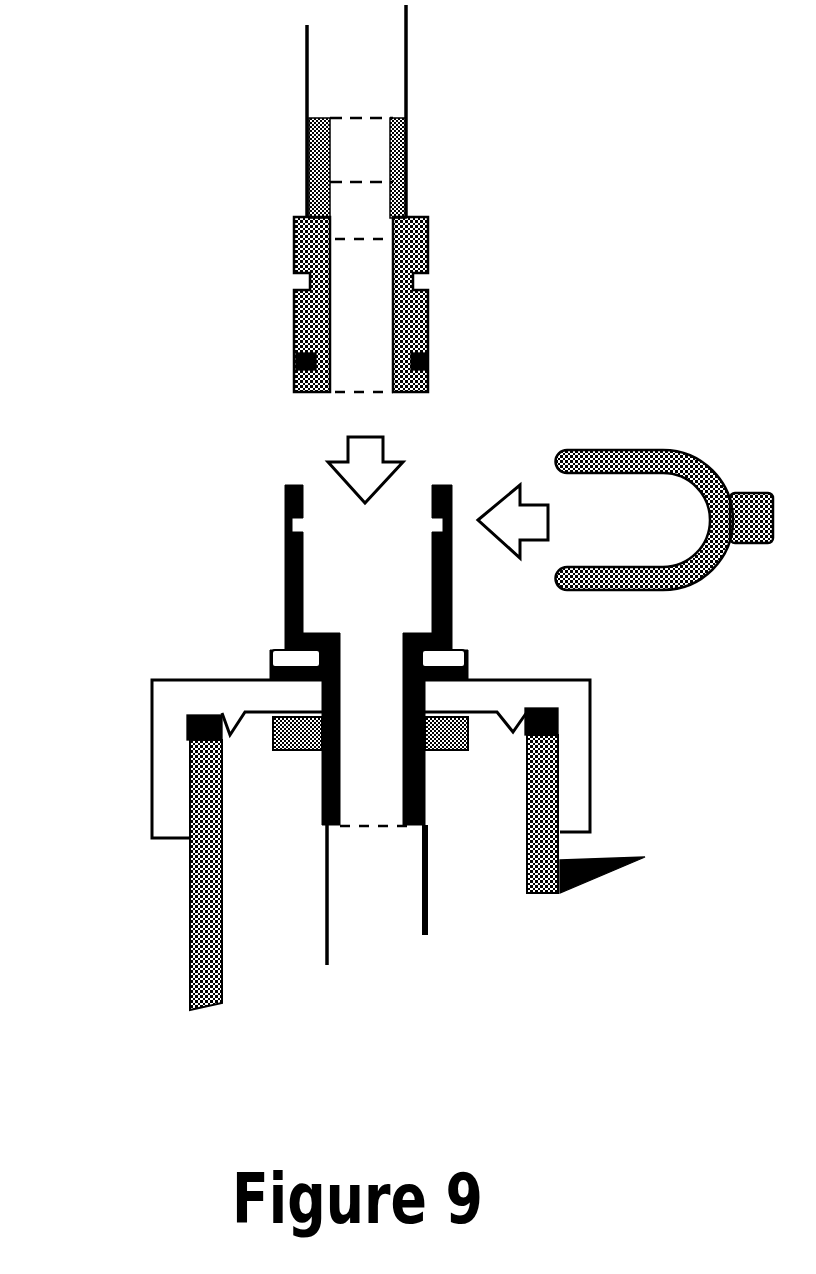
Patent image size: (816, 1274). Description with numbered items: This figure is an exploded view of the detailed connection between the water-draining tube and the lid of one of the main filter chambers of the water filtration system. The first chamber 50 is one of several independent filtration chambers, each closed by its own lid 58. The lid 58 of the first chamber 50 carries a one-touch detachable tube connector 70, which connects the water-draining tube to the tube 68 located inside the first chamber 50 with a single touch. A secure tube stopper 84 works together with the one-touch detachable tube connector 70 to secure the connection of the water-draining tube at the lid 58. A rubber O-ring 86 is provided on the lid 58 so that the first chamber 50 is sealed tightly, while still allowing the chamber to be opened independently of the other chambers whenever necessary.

The one-touch detachable tube connector 70 is at (458, 228).
The secure tube stopper 84 is at (285, 558).
The lid 58 is at (150, 758).
The first chamber 50 is at (165, 923).
The rubber O-ring 86 is at (558, 718).
The tube 68 is at (438, 903).